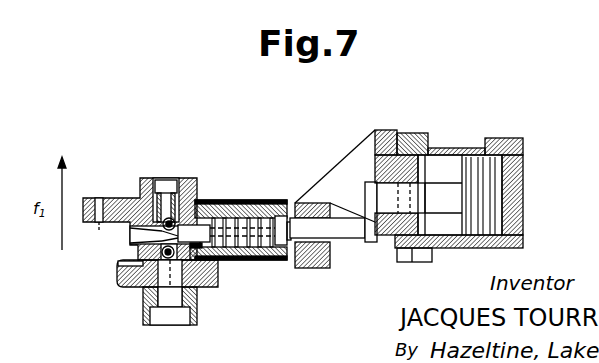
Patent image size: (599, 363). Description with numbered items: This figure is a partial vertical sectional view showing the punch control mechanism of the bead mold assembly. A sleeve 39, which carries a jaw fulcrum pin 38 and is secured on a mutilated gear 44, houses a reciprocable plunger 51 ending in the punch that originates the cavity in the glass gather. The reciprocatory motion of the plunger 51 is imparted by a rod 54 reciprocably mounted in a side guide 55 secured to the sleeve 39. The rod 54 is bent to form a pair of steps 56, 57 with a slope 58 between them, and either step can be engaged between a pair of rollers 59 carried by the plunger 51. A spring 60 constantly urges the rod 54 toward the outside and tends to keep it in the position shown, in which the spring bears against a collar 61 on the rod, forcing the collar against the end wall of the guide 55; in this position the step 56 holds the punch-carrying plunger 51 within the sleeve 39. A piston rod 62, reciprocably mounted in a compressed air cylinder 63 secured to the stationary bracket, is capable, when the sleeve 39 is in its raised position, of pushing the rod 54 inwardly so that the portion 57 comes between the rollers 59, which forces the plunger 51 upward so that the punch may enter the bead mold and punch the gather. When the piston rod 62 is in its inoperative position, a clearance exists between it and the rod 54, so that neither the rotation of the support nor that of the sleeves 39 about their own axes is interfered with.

The fulcrum pin 38 is at (97, 199).
The sleeve 39 is at (124, 207).
The mutilated gear 44 is at (132, 278).
The plunger 51 is at (173, 312).
The rod 54 is at (255, 252).
The side guide 55 is at (236, 214).
The step 56 is at (160, 247).
The step 57 is at (194, 230).
The slope 58 is at (203, 248).
The roller 59 is at (163, 224).
The spring 60 is at (253, 216).
The collar 61 is at (288, 214).
The piston rod 62 is at (333, 199).
The compressed air cylinder 63 is at (452, 152).